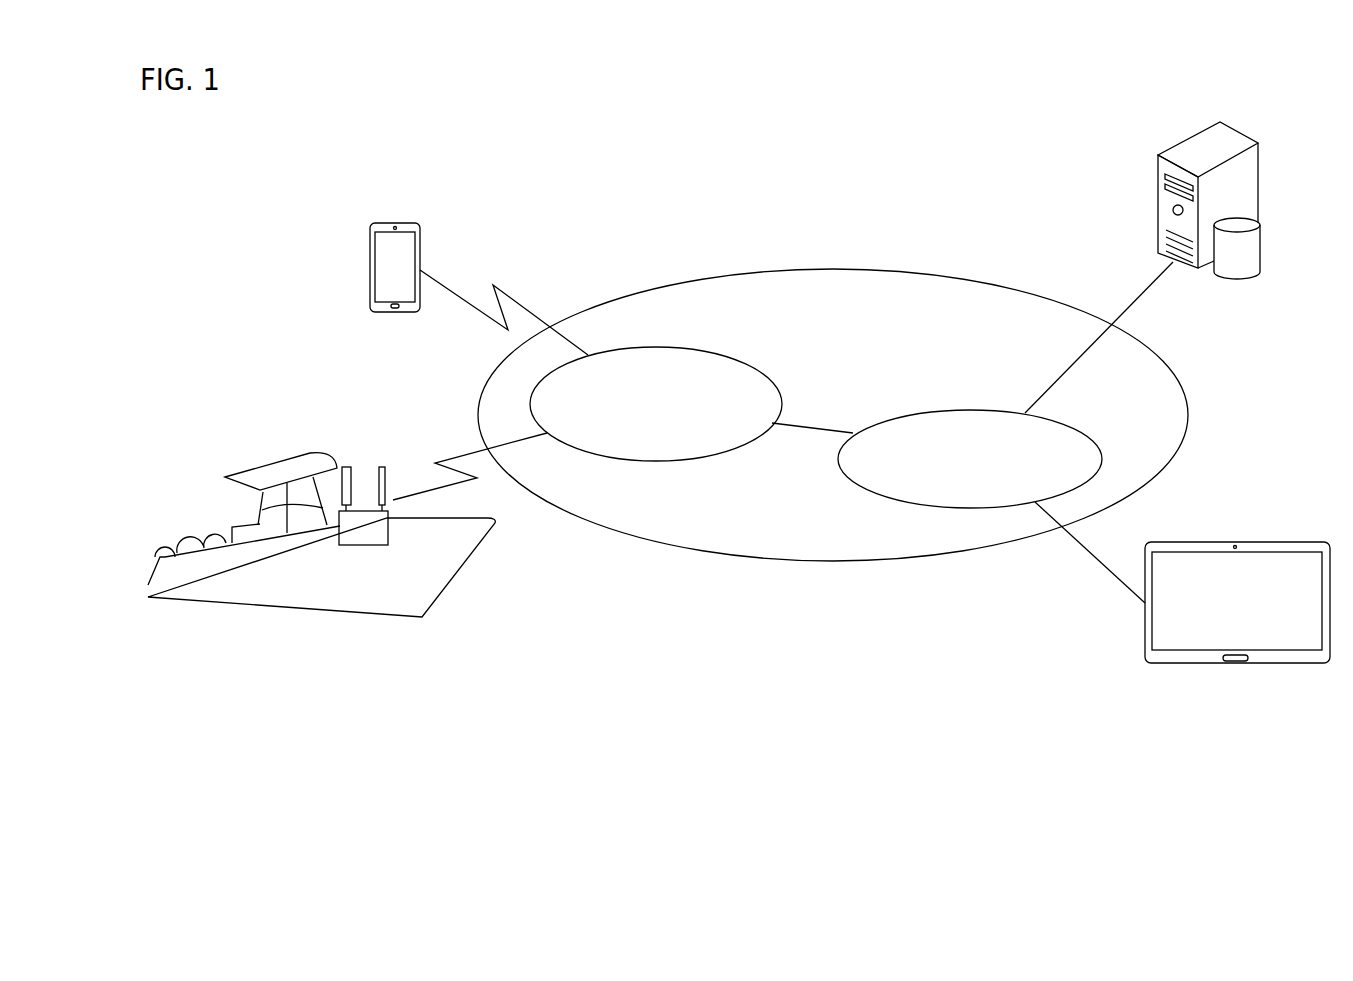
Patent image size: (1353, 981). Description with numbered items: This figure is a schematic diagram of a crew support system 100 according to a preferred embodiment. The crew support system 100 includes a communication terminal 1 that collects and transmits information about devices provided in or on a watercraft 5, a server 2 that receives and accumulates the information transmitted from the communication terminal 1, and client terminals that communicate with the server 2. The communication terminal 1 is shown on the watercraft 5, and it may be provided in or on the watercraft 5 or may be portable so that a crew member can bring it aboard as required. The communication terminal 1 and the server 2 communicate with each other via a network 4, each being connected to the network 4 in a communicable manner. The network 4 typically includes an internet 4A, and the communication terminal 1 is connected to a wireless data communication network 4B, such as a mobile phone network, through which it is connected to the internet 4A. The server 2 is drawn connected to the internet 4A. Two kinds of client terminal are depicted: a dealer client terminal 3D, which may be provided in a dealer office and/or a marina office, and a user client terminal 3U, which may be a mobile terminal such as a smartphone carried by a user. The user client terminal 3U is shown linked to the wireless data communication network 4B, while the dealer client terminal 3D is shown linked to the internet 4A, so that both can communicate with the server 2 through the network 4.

The crew support system 100 is at (865, 674).
The communication terminal 1 is at (363, 536).
The server 2 is at (1195, 145).
The user client terminal 3U is at (405, 223).
The dealer client terminal 3D is at (1258, 542).
The network 4 is at (834, 268).
The internet 4A is at (968, 410).
The wireless data communication network 4B is at (695, 461).
The watercraft 5 is at (233, 585).